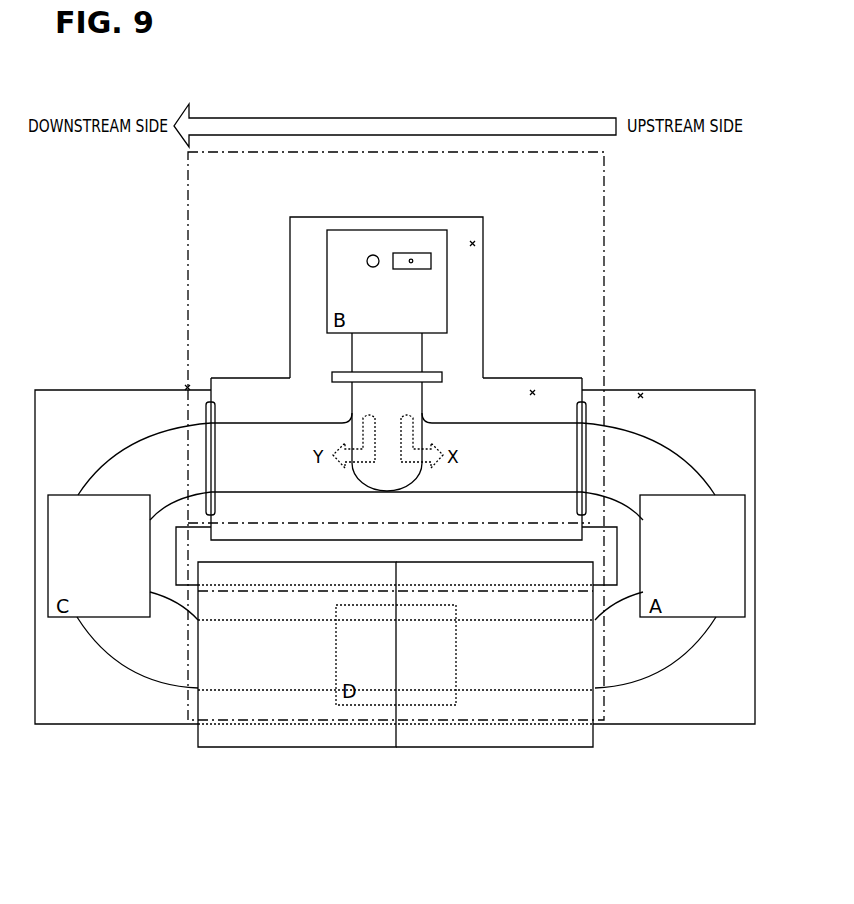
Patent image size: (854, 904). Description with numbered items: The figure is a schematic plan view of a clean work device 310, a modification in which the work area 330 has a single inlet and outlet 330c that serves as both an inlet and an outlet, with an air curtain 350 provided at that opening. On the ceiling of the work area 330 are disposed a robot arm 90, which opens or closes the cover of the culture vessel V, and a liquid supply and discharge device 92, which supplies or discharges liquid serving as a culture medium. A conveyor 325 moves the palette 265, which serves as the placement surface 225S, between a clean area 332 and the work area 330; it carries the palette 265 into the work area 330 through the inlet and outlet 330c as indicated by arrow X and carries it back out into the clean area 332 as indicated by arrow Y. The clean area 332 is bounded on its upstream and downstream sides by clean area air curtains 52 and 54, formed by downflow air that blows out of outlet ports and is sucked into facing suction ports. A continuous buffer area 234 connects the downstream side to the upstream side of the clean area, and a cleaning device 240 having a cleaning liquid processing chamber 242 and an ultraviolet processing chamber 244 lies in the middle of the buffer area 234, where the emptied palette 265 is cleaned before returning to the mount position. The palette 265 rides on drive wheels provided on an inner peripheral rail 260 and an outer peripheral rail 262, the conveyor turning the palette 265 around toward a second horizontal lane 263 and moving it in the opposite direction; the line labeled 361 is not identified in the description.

The clean work device 310 is at (643, 72).
The work area 330 is at (474, 240).
The inlet and outlet 330c is at (444, 371).
The liquid supply and discharge device 92 is at (376, 255).
The robot arm 90 is at (411, 253).
The conveyor 325 is at (285, 422).
The air curtain 350 is at (441, 375).
The clean area air curtain 54 is at (208, 418).
The clean area air curtain 52 is at (583, 418).
The clean area 332 is at (532, 388).
The buffer area 234 is at (640, 393).
The cleaning device 240 is at (395, 701).
The cleaning liquid processing chamber 242 is at (372, 735).
The ultraviolet processing chamber 244 is at (427, 735).
The inner peripheral rail 260 is at (167, 612).
The outer peripheral rail 262 is at (150, 680).
The second horizontal lane 263 is at (600, 640).
The partition wall 361 is at (607, 463).
The palette 265 is at (337, 276).
The placement surface 225S is at (367, 287).